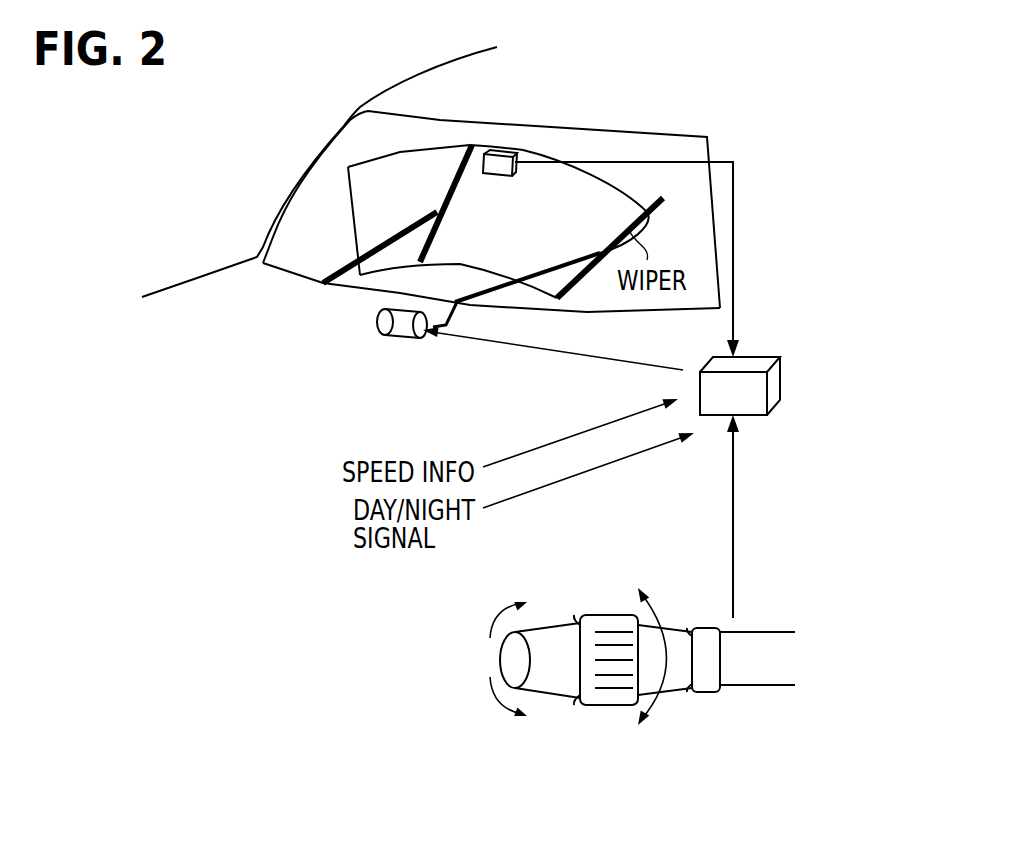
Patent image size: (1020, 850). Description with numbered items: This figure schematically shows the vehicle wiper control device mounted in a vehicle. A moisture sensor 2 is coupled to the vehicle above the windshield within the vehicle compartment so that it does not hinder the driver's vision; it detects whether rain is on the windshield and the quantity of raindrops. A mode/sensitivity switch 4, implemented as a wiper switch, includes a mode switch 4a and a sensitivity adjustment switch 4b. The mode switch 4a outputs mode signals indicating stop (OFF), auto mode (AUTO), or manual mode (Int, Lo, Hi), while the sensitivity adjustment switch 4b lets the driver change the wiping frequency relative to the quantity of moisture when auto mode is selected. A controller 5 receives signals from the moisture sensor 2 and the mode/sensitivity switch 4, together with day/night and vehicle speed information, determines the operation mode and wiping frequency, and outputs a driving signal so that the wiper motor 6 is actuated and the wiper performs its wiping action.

The moisture sensor 2 is at (502, 150).
The mode/sensitivity switch 4 is at (584, 642).
The mode switch 4a is at (555, 695).
The sensitivity adjustment switch 4b is at (607, 712).
The controller 5 is at (773, 383).
The wiper motor 6 is at (397, 330).